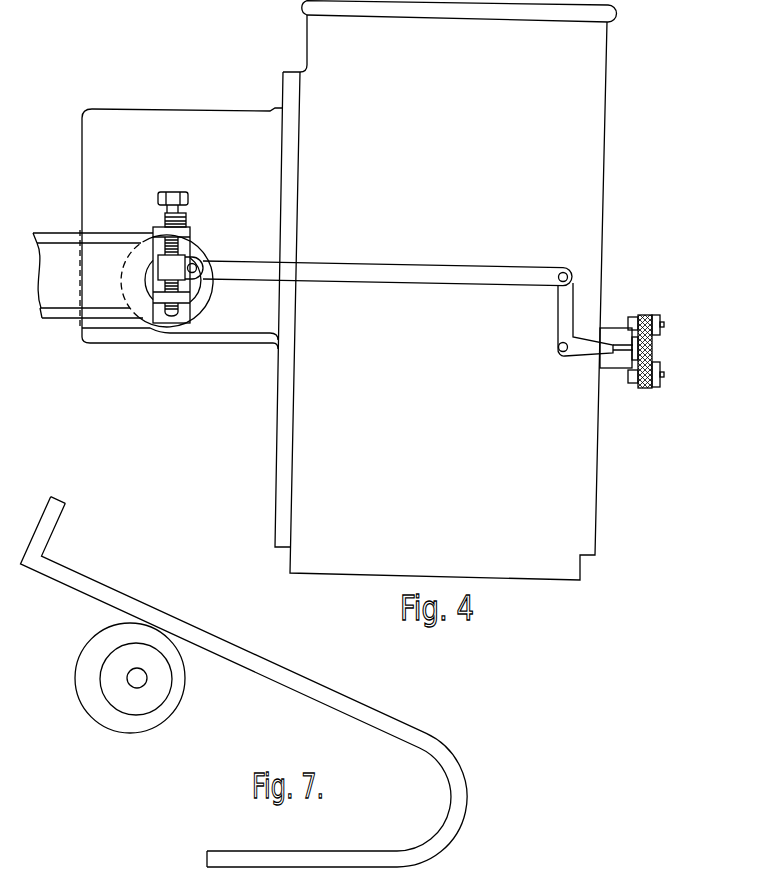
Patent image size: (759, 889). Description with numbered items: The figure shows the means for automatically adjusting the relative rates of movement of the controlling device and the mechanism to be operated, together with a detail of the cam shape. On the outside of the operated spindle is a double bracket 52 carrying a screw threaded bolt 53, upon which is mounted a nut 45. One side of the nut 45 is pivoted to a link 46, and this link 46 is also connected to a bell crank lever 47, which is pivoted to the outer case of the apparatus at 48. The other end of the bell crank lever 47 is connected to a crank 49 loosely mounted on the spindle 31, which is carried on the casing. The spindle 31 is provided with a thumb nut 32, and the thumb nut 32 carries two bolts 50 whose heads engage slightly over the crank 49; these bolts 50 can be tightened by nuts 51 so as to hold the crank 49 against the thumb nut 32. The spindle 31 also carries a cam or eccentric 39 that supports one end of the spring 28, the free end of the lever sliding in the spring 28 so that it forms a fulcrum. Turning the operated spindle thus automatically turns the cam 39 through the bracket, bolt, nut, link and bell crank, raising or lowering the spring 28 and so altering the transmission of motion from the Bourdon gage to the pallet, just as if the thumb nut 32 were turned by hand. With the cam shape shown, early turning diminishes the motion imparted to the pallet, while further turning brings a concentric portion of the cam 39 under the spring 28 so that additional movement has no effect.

In FIG. 7, the spring 28 is at (236, 647).
In FIG. 4, the spindle 31 is at (603, 328).
In FIG. 4, the thumb nut 32 is at (650, 316).
In FIG. 7, the cam or eccentric 39 is at (79, 701).
In FIG. 4, the nut 45 is at (195, 263).
In FIG. 4, the link 46 is at (437, 266).
In FIG. 4, the bell crank lever 47 is at (558, 312).
In FIG. 4, the pivot 48 is at (560, 354).
In FIG. 4, the crank 49 is at (658, 366).
In FIG. 4, the bolts 50 is at (638, 317).
In FIG. 4, the nuts 51 is at (658, 328).
In FIG. 4, the double bracket 52 is at (188, 230).
In FIG. 4, the screw threaded bolt 53 is at (148, 242).